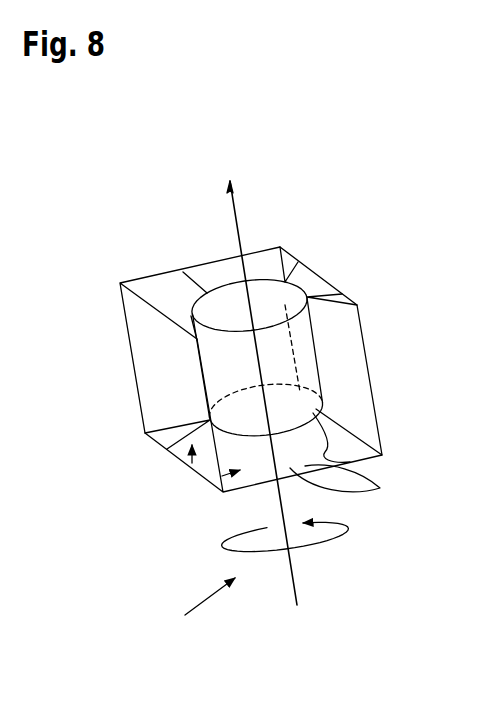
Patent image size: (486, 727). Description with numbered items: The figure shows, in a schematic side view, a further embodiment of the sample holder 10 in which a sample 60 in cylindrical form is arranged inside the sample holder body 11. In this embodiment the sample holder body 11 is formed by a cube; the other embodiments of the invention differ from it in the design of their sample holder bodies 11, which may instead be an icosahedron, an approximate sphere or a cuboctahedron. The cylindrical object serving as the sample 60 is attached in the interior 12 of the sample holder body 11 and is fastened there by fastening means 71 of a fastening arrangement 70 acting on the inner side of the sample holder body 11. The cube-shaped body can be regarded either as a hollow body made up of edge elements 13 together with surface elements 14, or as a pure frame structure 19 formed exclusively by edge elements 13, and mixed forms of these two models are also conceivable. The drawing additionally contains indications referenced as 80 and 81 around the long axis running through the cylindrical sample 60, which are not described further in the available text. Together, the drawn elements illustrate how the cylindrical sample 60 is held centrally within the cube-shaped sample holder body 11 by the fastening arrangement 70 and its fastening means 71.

The sample holder 10 is at (251, 285).
The frame structure 19 is at (251, 369).
The sample holder body 11 is at (318, 271).
The interior 12 is at (262, 268).
The edge elements 13 is at (140, 277).
The surface elements 14 is at (165, 399).
The sample 60 is at (256, 392).
The fastening arrangement 70 is at (216, 477).
The fastening means 71 is at (350, 467).
The rotation axis direction 80 is at (197, 612).
The rotation direction 81 is at (295, 585).